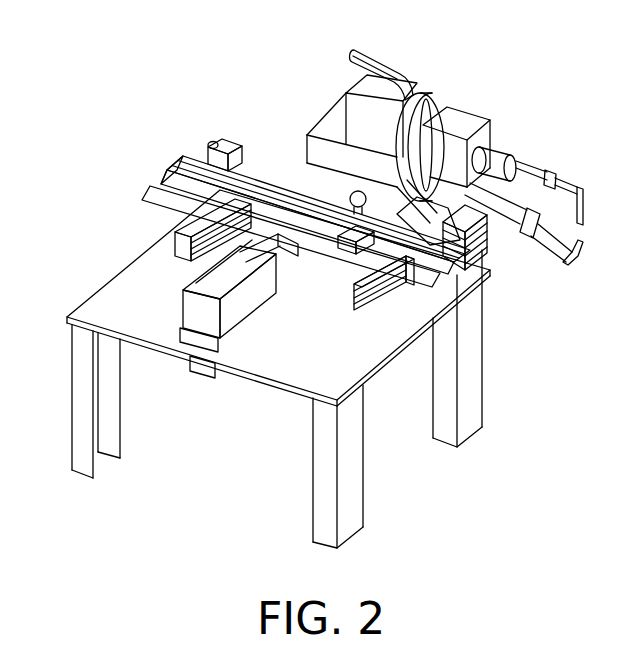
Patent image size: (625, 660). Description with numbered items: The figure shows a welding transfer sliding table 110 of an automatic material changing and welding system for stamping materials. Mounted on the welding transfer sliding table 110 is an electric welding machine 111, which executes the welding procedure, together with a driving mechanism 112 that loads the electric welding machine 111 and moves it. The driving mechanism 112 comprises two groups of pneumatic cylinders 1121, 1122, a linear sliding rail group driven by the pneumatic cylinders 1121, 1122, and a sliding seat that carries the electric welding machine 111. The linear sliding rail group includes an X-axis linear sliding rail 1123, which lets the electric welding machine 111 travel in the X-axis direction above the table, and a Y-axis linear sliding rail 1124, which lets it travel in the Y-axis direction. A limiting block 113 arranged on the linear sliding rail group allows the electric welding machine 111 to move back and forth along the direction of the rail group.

The welding transfer sliding table 110 is at (360, 341).
The electric welding machine 111 is at (463, 128).
The driving mechanism 112 is at (294, 166).
The limiting block 113 is at (477, 228).
The pneumatic cylinder 1121 is at (222, 146).
The pneumatic cylinder 1122 is at (221, 288).
The X-axis linear sliding rail 1123 is at (197, 222).
The Y-axis linear sliding rail 1124 is at (349, 238).